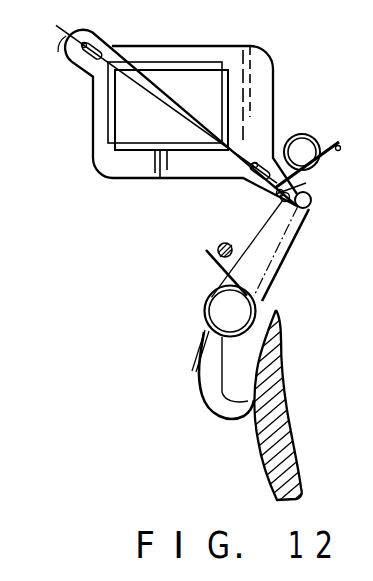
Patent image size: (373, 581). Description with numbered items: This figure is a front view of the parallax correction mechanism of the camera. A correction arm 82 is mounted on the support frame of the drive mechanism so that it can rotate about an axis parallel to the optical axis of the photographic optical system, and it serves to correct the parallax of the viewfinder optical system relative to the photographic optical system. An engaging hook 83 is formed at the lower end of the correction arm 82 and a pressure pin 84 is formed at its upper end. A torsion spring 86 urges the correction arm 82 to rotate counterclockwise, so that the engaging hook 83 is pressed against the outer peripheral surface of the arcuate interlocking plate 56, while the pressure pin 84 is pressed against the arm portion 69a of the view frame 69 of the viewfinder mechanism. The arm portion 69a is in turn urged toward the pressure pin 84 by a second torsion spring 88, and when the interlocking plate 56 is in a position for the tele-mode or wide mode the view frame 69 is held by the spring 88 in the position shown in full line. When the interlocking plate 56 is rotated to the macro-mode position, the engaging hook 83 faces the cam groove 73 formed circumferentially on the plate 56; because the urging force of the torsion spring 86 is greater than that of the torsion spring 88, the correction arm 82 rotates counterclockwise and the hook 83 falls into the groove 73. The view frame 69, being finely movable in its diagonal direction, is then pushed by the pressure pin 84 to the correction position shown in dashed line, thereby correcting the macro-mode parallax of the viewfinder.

The view frame 69 is at (272, 66).
The arm portion 69a is at (253, 184).
The torsion spring 88 is at (329, 148).
The pressure pin 84 is at (311, 205).
The correction arm 82 is at (266, 276).
The torsion spring 86 is at (192, 355).
The engaging hook 83 is at (237, 413).
The interlocking plate 56 is at (280, 362).
The cam groove 73 is at (268, 468).